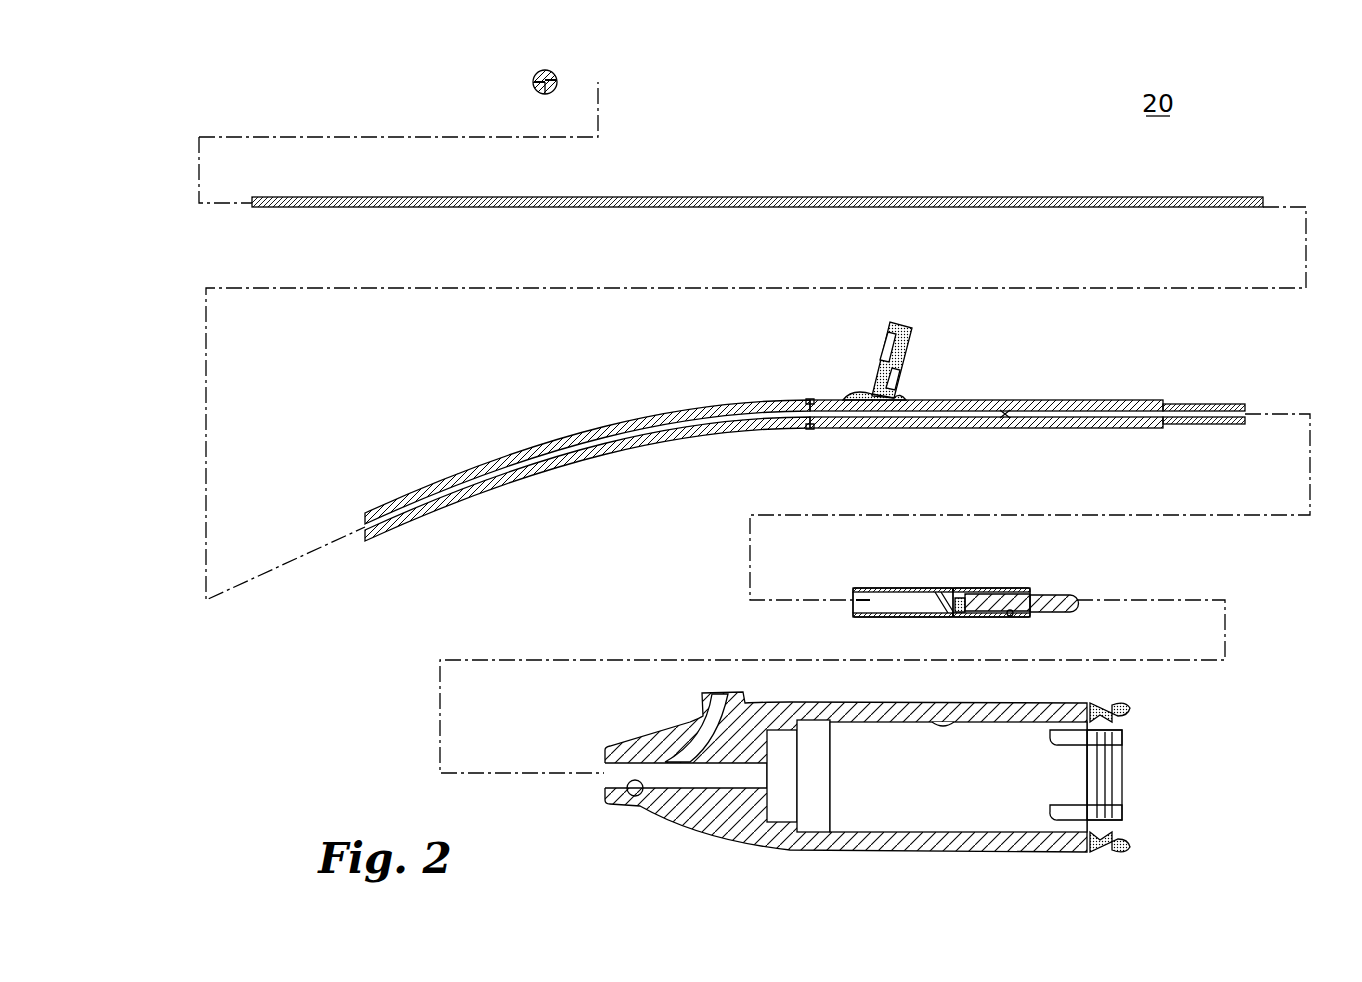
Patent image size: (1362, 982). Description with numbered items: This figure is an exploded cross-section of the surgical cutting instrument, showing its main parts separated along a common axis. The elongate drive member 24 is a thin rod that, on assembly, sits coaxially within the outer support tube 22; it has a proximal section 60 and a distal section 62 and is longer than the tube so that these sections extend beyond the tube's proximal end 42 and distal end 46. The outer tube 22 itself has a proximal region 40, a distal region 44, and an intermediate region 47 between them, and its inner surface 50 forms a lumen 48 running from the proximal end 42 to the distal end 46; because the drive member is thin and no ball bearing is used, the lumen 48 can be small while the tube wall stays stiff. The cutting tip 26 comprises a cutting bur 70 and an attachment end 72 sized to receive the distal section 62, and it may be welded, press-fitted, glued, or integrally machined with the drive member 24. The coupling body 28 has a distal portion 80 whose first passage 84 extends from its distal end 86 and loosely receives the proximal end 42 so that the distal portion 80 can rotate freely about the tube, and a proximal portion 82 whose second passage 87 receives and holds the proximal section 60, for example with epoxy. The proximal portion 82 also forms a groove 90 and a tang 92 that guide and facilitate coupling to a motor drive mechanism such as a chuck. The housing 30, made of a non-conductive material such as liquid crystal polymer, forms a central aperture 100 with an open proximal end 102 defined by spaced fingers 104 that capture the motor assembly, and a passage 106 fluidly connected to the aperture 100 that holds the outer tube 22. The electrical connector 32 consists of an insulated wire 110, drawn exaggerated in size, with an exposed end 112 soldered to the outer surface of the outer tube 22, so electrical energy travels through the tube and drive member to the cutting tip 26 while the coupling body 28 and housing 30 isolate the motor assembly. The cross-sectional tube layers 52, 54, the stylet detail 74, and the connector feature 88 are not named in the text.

The outer support tube 22 is at (801, 447).
The elongate drive member 24 is at (978, 196).
The cutting tip 26 is at (550, 66).
The coupling body 28 is at (924, 590).
The housing 30 is at (891, 779).
The electrical connector 32 is at (901, 354).
The proximal region 40 is at (1052, 432).
The proximal end 42 is at (1247, 410).
The distal region 44 is at (420, 520).
The distal end 46 is at (362, 524).
The intermediate region 47 is at (563, 468).
The lumen 48 is at (948, 428).
The inner surface 50 is at (1090, 412).
The outer tube 52 is at (482, 455).
The step 54 is at (806, 398).
The proximal section 60 is at (1132, 208).
The distal section 62 is at (318, 208).
The cutting bur 70 is at (533, 84).
The attachment end 72 is at (557, 80).
The stylet lumen 74 is at (553, 92).
The distal portion 80 is at (886, 588).
The proximal portion 82 is at (990, 588).
The first passage 84 is at (856, 603).
The distal end 86 is at (852, 598).
The second passage 87 is at (940, 603).
The connector seal 88 is at (958, 614).
The groove 90 is at (1010, 616).
The tang 92 is at (1058, 596).
The central aperture 100 is at (944, 722).
The open proximal end 102 is at (1124, 748).
The fingers 104 is at (1102, 706).
The passage 106 is at (630, 796).
The insulated wire 110 is at (885, 352).
The exposed end 112 is at (895, 392).